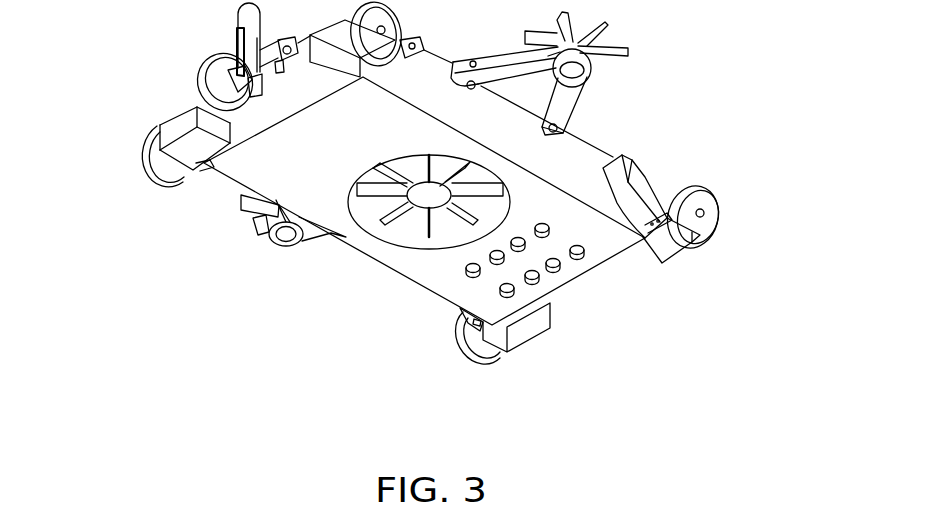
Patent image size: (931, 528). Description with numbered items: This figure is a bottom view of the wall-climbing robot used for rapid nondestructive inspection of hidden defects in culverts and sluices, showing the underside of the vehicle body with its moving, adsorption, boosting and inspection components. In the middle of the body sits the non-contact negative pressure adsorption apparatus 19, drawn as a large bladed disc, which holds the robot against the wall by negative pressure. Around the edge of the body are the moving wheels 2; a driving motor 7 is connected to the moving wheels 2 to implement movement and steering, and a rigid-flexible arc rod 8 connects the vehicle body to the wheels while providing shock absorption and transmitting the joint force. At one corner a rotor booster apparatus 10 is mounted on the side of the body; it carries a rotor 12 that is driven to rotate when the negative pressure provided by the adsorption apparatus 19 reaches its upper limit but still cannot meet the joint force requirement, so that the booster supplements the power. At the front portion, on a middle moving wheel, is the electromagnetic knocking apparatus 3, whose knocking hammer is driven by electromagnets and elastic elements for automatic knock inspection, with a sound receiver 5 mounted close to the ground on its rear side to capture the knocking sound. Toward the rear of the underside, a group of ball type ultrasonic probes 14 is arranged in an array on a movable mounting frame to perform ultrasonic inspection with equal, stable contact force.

The moving wheel 2 is at (704, 224).
The electromagnetic knocking apparatus 3 is at (252, 38).
The sound receiver 5 is at (262, 93).
The driving motor 7 is at (666, 258).
The rigid-flexible arc rod 8 is at (627, 197).
The rotor booster apparatus 10 is at (575, 100).
The rotor 12 is at (617, 50).
The ball type ultrasonic probe 14 is at (535, 278).
The negative pressure adsorption apparatus 19 is at (395, 210).